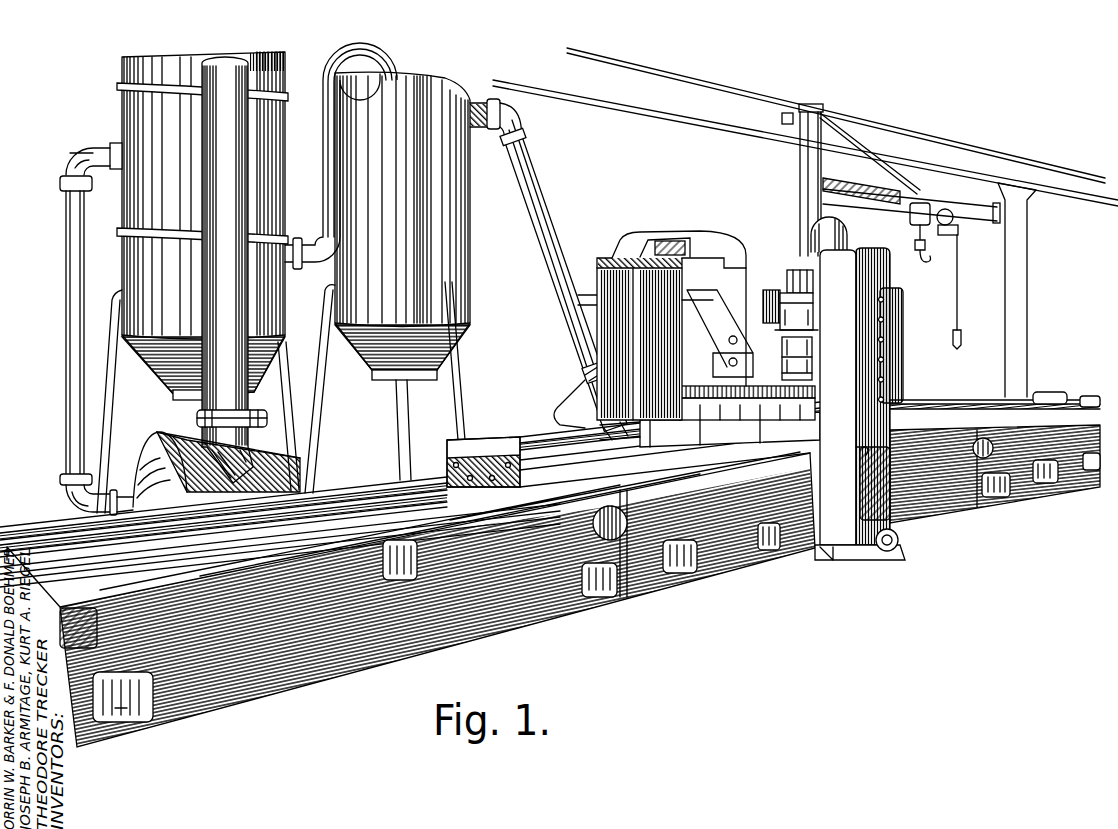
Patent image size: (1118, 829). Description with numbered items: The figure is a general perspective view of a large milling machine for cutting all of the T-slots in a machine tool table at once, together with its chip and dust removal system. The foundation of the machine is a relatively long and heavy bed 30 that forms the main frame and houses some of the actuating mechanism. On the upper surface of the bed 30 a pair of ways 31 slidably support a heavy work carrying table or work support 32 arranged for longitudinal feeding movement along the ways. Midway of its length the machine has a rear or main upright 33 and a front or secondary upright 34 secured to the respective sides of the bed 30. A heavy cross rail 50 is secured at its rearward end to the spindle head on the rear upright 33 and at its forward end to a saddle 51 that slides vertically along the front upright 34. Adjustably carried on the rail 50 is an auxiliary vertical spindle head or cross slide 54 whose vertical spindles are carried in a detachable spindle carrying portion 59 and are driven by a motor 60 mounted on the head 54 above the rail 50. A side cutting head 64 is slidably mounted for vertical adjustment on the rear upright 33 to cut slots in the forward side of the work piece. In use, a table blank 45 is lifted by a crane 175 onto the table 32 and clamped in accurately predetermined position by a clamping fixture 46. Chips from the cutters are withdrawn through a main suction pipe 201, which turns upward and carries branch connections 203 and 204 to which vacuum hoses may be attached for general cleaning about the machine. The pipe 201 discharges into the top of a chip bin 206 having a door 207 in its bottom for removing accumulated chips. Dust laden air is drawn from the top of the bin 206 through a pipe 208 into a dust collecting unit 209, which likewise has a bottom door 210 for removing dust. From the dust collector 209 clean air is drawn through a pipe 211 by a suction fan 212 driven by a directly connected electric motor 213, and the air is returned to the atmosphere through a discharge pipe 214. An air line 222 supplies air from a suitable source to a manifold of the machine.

The bed 30 is at (723, 563).
The ways 31 is at (360, 483).
The work support 32 is at (498, 442).
The rear upright 33 is at (637, 234).
The front upright 34 is at (875, 272).
The table blank 45 is at (810, 395).
The clamping fixture 46 is at (812, 415).
The cross rail 50 is at (773, 290).
The saddle 51 is at (896, 355).
The vertical spindle head 54 is at (795, 270).
The spindle carrying portion 59 is at (813, 340).
The motor 60 is at (838, 227).
The side cutting head 64 is at (722, 298).
The crane 175 is at (974, 220).
The main suction pipe 201 is at (553, 214).
The branch connection 203 is at (620, 349).
The branch connection 204 is at (605, 301).
The chip bin 206 is at (470, 223).
The door 207 is at (423, 382).
The pipe 208 is at (321, 86).
The dust collecting unit 209 is at (128, 117).
The door 210 is at (188, 400).
The pipe 211 is at (68, 258).
The suction fan 212 is at (141, 450).
The electric motor 213 is at (293, 478).
The discharge pipe 214 is at (215, 191).
The air line 222 is at (583, 428).